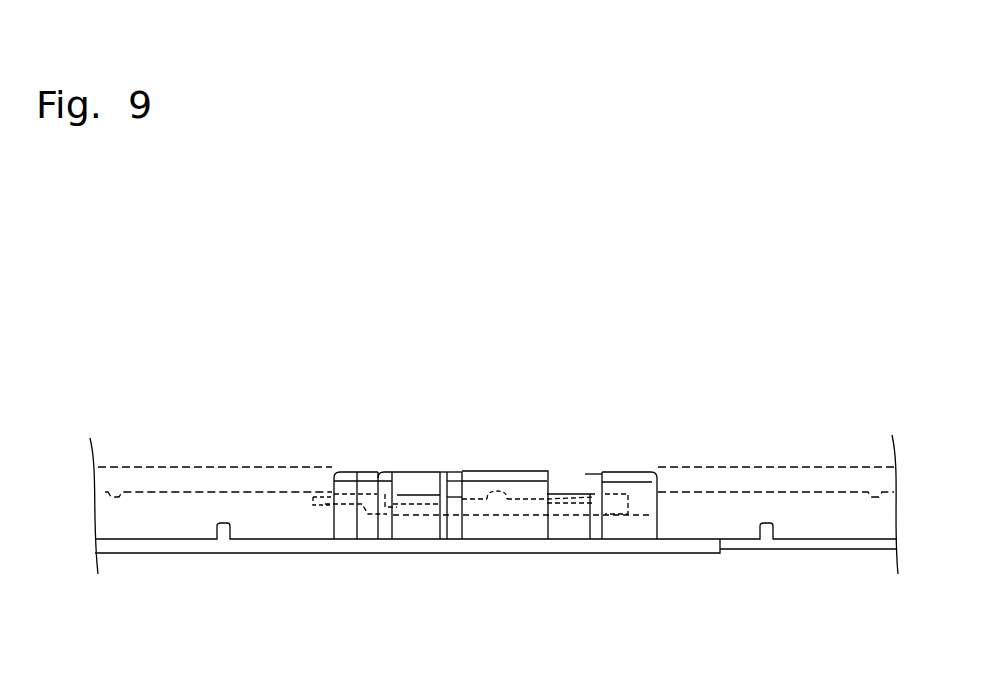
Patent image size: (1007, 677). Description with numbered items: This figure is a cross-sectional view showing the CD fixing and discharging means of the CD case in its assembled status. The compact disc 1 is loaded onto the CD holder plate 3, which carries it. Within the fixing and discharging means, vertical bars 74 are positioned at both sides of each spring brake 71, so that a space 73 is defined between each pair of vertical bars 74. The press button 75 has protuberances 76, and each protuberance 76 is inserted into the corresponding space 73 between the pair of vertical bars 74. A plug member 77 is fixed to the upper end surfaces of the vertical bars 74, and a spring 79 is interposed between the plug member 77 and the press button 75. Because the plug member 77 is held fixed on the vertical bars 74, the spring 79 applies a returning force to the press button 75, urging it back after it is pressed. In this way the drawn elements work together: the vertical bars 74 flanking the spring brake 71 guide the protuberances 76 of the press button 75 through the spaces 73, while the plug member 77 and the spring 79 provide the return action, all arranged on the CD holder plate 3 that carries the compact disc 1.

The compact disc 1 is at (810, 475).
The CD holder plate 3 is at (833, 547).
The spring brake 71 is at (418, 480).
The space 73 is at (568, 522).
The vertical bars 74 is at (358, 485).
The press button 75 is at (492, 505).
The protuberance 76 is at (322, 498).
The plug member 77 is at (477, 478).
The spring 79 is at (537, 494).